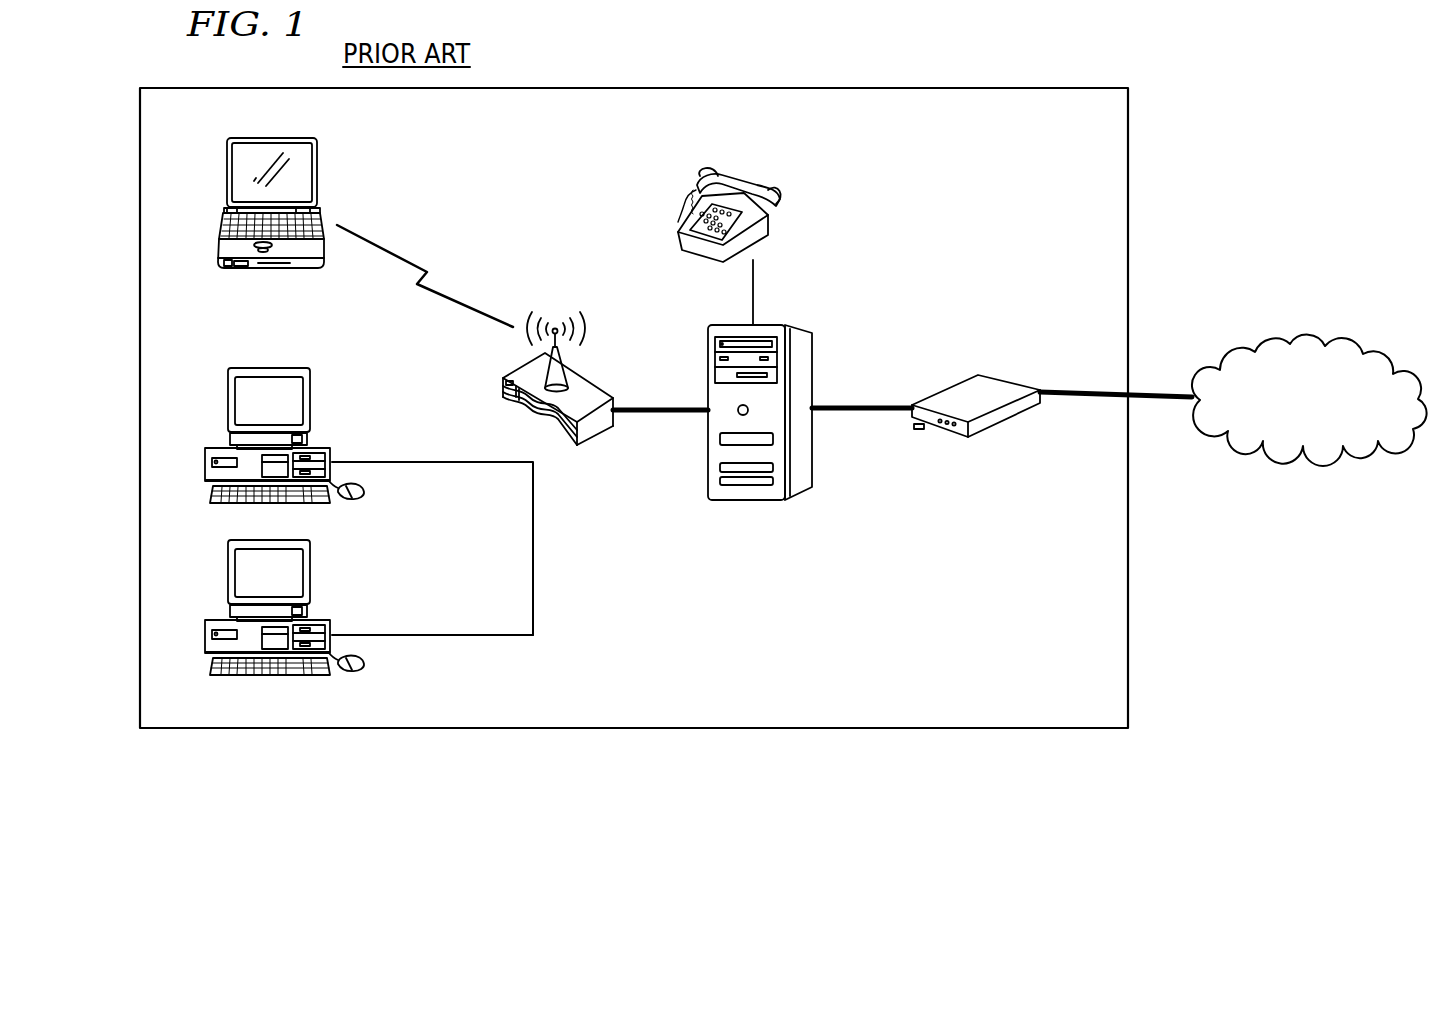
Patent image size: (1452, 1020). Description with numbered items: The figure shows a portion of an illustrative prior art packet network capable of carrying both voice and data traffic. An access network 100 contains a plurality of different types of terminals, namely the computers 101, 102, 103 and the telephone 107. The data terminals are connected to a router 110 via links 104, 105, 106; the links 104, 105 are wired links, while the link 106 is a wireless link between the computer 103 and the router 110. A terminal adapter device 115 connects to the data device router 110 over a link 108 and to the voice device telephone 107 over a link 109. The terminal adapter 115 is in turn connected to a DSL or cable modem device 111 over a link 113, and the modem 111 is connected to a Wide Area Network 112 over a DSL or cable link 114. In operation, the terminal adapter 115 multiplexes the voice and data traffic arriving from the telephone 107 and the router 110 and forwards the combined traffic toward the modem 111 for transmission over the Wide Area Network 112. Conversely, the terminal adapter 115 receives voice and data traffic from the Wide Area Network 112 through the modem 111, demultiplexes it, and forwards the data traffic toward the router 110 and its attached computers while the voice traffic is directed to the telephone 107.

The access network 100 is at (772, 86).
The computer 101 is at (228, 566).
The computer 102 is at (228, 398).
The computer 103 is at (227, 173).
The link 104 is at (442, 633).
The link 105 is at (432, 460).
The link 106 is at (418, 258).
The telephone 107 is at (740, 170).
The link 108 is at (657, 406).
The link 109 is at (753, 273).
The router 110 is at (575, 447).
The modem device 111 is at (968, 438).
The Wide Area Network 112 is at (1320, 335).
The link 113 is at (868, 403).
The link 114 is at (1168, 402).
The terminal adapter device 115 is at (742, 492).